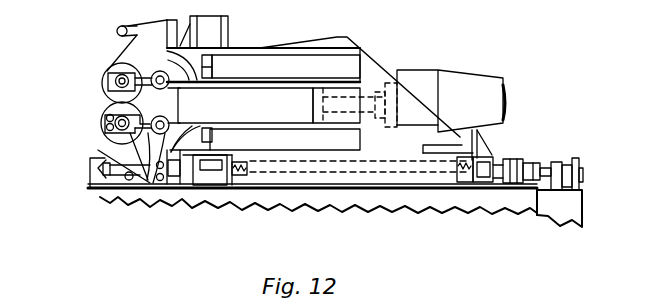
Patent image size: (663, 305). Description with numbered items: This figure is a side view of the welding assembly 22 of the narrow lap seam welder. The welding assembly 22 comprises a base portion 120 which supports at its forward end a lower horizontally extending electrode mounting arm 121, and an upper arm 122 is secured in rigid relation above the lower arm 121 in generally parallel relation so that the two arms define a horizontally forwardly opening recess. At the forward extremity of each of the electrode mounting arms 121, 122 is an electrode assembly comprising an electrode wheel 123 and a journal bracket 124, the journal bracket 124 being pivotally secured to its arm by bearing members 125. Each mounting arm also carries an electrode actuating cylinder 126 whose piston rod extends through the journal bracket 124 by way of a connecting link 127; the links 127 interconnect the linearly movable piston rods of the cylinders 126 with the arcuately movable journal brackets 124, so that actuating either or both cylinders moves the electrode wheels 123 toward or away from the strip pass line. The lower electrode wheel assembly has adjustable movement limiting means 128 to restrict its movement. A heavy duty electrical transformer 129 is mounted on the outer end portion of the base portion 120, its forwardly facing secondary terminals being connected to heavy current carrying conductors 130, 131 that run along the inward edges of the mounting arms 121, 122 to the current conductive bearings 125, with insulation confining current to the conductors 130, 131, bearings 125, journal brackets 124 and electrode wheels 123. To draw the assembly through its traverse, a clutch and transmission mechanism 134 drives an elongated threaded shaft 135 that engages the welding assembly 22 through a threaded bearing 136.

The welding assembly 22 is at (404, 49).
The base portion 120 is at (424, 155).
The lower horizontally extending electrode mounting arm 121 is at (277, 142).
The upper arm 122 is at (255, 62).
The electrode wheel 123 is at (115, 92).
The journal bracket 124 is at (133, 47).
The bearing members 125 is at (113, 80).
The electrode actuating cylinder 126 is at (208, 30).
The connecting link 127 is at (127, 28).
The adjustable movement limiting means 128 is at (88, 188).
The heavy duty electrical transformer 129 is at (487, 88).
The current carrying conductor 130 is at (302, 88).
The current carrying conductor 131 is at (318, 128).
The clutch and transmission mechanism 134 is at (573, 162).
The elongated threaded shaft 135 is at (469, 174).
The threaded bearing 136 is at (491, 158).